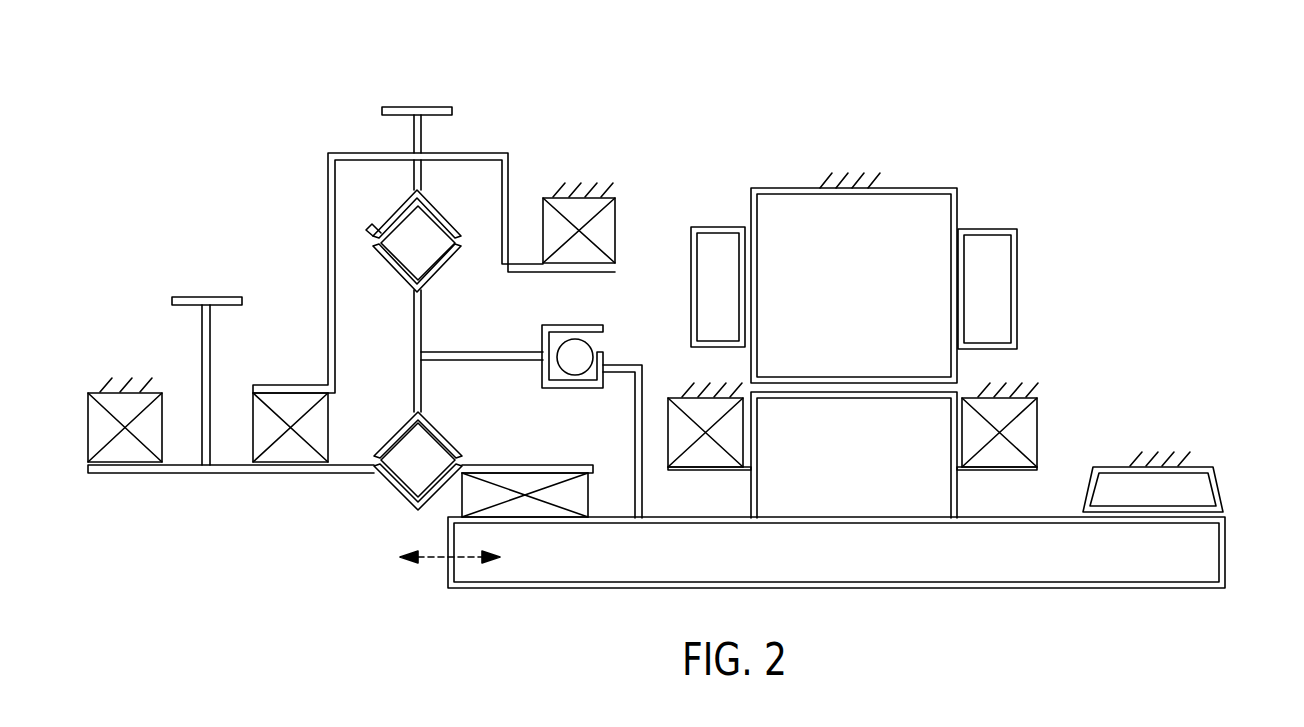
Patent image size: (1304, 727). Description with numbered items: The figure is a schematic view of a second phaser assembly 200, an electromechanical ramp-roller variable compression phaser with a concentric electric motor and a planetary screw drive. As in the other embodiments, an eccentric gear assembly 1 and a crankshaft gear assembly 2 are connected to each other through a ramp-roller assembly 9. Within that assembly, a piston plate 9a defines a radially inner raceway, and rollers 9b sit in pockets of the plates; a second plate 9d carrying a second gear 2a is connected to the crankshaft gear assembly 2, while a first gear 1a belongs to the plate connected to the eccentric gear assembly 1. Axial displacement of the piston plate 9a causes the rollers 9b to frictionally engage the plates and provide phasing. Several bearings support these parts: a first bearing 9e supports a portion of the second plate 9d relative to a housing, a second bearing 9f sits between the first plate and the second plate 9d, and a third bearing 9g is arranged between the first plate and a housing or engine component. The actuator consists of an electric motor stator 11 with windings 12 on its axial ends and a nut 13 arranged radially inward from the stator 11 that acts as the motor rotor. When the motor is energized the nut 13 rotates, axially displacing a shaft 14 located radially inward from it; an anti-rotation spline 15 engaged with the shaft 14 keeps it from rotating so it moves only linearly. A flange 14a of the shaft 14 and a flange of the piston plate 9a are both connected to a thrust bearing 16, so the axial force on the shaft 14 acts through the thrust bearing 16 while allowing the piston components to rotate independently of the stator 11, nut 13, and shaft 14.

The eccentric gear assembly 1 is at (178, 380).
The first gear 1a is at (195, 299).
The crankshaft gear assembly 2 is at (330, 93).
The second gear 2a is at (405, 108).
The second phaser assembly 200 is at (288, 220).
The ramp-roller assembly 9 is at (413, 378).
The piston plate 9a is at (413, 357).
The rollers 9b is at (395, 234).
The second plate 9d is at (440, 222).
The first bearing 9e is at (585, 205).
The second bearing 9f is at (290, 420).
The third bearing 9g is at (133, 427).
The electric motor stator 11 is at (903, 188).
The windings 12 is at (708, 227).
The nut 13 is at (935, 510).
The shaft 14 is at (1225, 566).
The flange 14a is at (620, 365).
The anti-rotation spline 15 is at (1223, 511).
The thrust bearing 16 is at (598, 322).